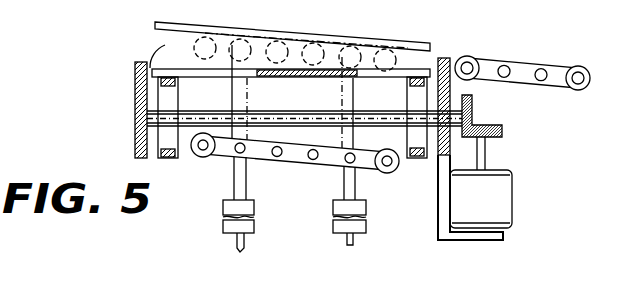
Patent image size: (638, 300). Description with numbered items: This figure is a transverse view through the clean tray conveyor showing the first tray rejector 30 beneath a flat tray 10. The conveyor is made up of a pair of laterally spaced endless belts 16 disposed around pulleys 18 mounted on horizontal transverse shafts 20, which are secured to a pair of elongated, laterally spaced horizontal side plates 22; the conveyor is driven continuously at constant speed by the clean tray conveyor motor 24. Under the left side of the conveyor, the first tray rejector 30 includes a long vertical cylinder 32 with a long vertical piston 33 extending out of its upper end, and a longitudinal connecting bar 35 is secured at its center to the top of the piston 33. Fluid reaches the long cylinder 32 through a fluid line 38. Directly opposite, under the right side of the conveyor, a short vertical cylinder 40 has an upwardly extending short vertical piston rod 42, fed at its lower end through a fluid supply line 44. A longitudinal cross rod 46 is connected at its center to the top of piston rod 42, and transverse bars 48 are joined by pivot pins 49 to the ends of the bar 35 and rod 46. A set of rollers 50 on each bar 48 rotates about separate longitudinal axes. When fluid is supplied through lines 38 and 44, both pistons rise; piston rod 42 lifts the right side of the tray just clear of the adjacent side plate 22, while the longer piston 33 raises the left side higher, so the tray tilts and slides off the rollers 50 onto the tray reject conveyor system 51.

The flat tray 10 is at (163, 68).
The endless belts 16 is at (162, 163).
The pulleys 18 is at (179, 92).
The shafts 20 is at (290, 110).
The side plates 22 is at (134, 92).
The clean tray conveyor motor 24 is at (513, 192).
The first tray rejector 30 is at (176, 243).
The long vertical cylinder 32 is at (222, 219).
The long vertical piston 33 is at (230, 184).
The longitudinal connecting bar 35 is at (234, 159).
The fluid line 38 is at (238, 250).
The short vertical cylinder 40 is at (367, 207).
The short vertical piston rod 42 is at (332, 206).
The fluid supply line 44 is at (355, 240).
The longitudinal cross rod 46 is at (360, 170).
The transverse bars 48 is at (330, 165).
The pivot pins 49 is at (350, 150).
The rollers 50 is at (302, 140).
The tray reject conveyor system 51 is at (527, 50).